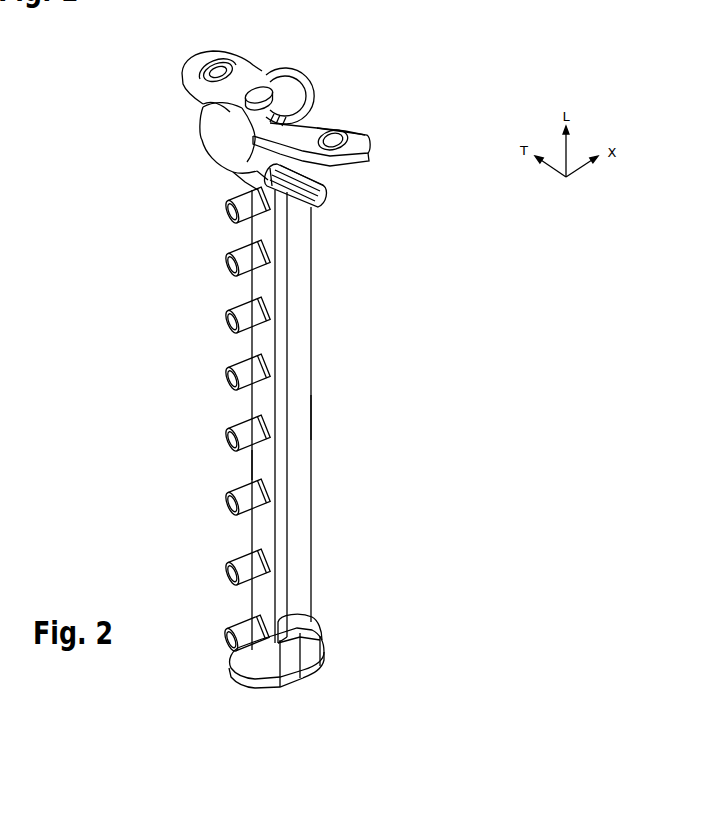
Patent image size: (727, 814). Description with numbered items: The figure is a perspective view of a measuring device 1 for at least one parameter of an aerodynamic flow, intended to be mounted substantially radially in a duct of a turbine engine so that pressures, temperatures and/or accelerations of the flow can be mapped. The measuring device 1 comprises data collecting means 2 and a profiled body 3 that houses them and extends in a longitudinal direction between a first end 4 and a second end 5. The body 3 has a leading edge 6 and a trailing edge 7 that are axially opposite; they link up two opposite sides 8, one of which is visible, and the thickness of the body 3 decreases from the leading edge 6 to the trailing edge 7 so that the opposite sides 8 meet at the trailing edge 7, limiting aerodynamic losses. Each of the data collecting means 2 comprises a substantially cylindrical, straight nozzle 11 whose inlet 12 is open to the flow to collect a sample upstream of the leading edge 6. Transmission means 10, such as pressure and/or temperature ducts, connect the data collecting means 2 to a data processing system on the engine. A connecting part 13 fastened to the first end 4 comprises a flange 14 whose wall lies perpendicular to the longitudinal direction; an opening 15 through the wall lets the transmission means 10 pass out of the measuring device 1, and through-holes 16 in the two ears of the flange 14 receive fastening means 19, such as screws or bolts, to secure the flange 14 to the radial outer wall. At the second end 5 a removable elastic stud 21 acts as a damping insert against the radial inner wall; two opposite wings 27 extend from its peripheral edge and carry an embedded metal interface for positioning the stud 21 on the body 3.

The measuring device 1 is at (438, 232).
The data collecting means 2 is at (202, 347).
The body 3 is at (312, 357).
The first end 4 is at (252, 225).
The second end 5 is at (314, 619).
The leading edge 6 is at (252, 464).
The trailing edge 7 is at (312, 459).
The opposite sides 8 is at (295, 428).
The transmission means 10 is at (218, 133).
The nozzle 11 is at (243, 424).
The inlet 12 is at (232, 433).
The connecting part 13 is at (378, 143).
The flange 14 is at (327, 123).
The opening 15 is at (300, 98).
The through-holes 16 is at (340, 133).
The fastening means 19 is at (229, 68).
The stud 21 is at (330, 668).
The wings 27 is at (298, 615).